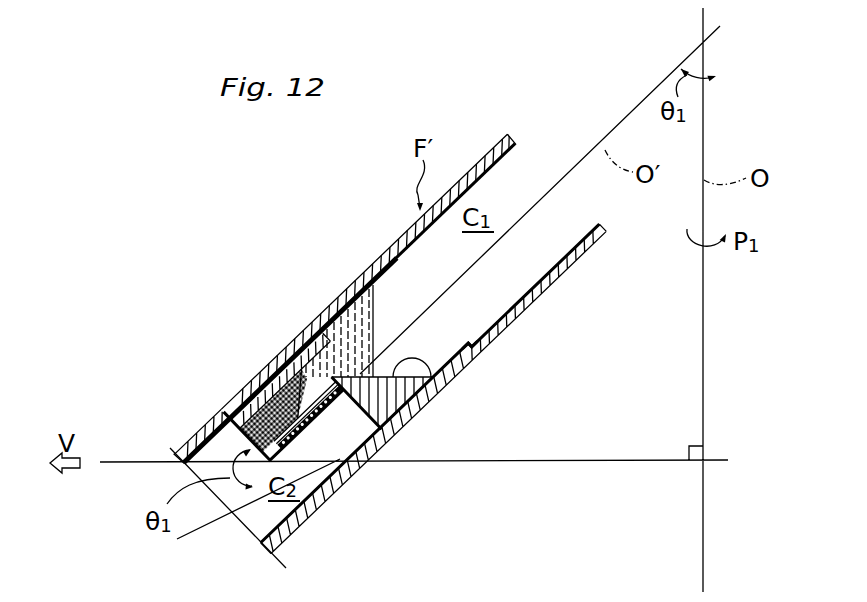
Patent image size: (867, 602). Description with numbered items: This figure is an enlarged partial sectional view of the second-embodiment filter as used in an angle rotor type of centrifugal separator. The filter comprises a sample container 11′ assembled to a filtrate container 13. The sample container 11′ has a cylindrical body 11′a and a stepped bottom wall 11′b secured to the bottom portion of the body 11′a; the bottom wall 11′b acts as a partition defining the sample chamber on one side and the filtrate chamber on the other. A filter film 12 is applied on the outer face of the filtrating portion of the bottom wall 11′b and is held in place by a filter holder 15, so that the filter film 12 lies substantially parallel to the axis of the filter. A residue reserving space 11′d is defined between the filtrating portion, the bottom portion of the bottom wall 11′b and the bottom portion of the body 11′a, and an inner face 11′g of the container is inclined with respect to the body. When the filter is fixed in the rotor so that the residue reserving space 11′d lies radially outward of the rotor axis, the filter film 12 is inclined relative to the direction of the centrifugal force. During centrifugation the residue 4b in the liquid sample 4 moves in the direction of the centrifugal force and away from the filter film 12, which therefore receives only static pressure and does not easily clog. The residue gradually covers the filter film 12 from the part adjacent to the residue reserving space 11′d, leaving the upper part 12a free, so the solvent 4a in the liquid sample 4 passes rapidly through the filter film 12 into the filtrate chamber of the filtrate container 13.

The liquid sample 4 is at (378, 323).
The solvent 4a is at (330, 318).
The residue 4b is at (252, 395).
The filter film 12 is at (265, 398).
The upper part of the filter film 12a is at (300, 360).
The sample container 11′ is at (492, 302).
The cylindrical body 11′a is at (478, 346).
The bottom wall 11′b is at (232, 398).
The residue reserving space 11′d is at (250, 386).
The inner face 11′g is at (425, 365).
The filtrate container 13 is at (312, 515).
The filter holder 15 is at (295, 433).